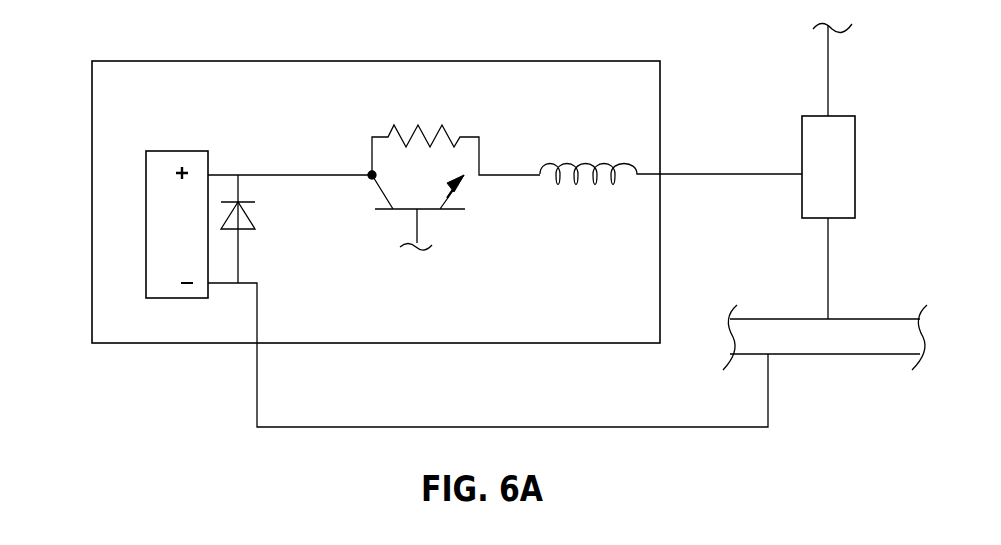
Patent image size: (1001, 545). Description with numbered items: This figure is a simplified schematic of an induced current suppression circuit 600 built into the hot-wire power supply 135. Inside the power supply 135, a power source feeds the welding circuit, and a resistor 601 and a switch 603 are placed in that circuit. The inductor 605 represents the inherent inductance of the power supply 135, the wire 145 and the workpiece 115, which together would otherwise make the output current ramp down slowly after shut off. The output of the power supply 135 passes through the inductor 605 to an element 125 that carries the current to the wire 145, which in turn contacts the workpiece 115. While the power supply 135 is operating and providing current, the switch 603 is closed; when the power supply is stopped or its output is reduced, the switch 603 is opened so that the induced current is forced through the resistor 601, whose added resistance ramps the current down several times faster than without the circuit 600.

The circuit 600 is at (288, 146).
The power supply 135 is at (92, 97).
The resistor 601 is at (413, 127).
The switch 603 is at (452, 212).
The inductor 605 is at (595, 182).
The connector element 125 is at (855, 148).
The wire 145 is at (828, 70).
The workpiece 115 is at (838, 354).